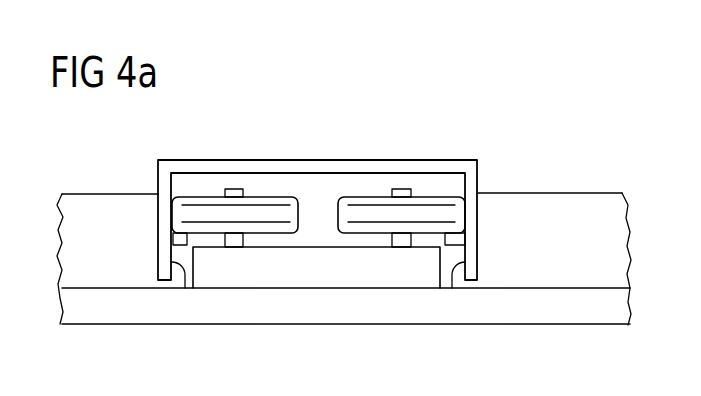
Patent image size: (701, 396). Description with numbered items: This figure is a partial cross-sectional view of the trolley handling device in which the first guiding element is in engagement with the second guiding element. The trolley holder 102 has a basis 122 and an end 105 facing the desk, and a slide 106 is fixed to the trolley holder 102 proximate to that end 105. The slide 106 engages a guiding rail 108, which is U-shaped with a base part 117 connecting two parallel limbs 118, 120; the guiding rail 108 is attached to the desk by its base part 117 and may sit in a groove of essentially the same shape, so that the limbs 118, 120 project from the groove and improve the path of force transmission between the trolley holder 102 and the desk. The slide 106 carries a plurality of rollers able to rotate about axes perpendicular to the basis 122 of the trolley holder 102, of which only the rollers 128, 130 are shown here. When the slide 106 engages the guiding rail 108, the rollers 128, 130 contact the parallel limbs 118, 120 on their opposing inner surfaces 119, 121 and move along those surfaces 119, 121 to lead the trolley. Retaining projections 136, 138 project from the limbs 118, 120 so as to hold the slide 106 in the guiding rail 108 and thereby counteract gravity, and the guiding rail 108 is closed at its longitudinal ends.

The trolley holder 102 is at (502, 315).
The end of the trolley holder 105 is at (312, 290).
The slide 106 is at (380, 275).
The guiding rail 108 is at (371, 152).
The base part 117 is at (320, 165).
The limb 118 is at (478, 208).
The inner surface 119 is at (450, 290).
The limb 120 is at (158, 213).
The inner surface 121 is at (182, 283).
The basis of the trolley holder 122 is at (248, 313).
The roller 128 is at (213, 212).
The roller 130 is at (428, 212).
The retaining projection 136 is at (466, 238).
The retaining projection 138 is at (172, 238).